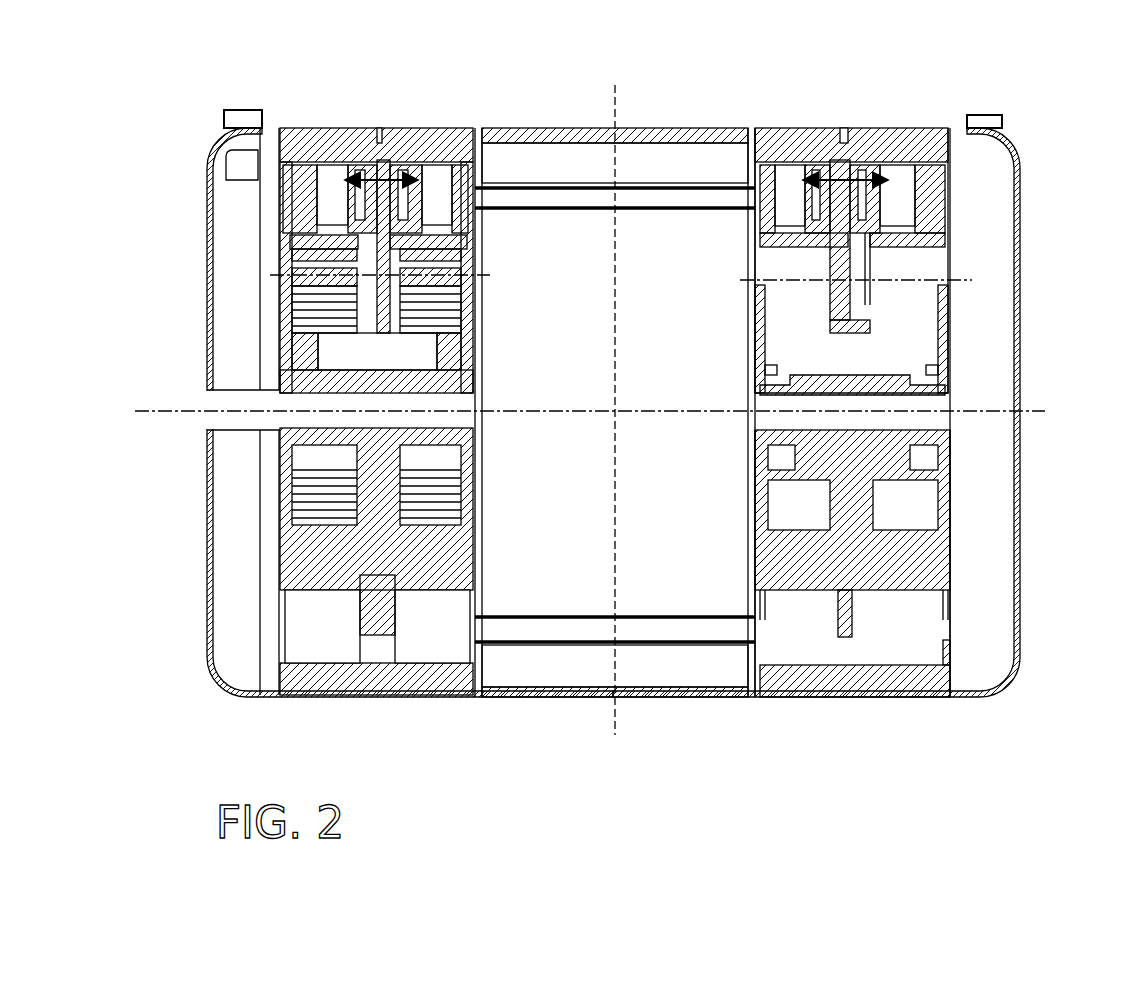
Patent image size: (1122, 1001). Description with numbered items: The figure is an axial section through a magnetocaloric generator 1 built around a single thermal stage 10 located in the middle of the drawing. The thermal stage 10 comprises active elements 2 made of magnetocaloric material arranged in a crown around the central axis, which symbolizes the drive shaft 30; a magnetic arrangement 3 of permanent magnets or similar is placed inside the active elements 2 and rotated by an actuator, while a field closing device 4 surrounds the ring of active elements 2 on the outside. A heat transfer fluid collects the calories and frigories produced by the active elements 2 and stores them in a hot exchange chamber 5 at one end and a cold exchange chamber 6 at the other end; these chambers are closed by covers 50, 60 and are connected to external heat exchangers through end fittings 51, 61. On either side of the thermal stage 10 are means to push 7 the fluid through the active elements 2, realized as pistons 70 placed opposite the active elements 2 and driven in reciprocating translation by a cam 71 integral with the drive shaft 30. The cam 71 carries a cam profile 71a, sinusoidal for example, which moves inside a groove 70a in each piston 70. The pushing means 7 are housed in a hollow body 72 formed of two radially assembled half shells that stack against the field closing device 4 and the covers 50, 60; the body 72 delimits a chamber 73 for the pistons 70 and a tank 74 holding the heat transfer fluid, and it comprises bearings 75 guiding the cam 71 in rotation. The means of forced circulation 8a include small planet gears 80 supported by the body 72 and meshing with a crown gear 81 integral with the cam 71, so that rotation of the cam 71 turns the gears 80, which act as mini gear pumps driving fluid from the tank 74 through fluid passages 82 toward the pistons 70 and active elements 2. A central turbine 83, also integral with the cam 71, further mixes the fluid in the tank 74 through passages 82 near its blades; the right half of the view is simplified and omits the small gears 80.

The magnetocaloric generator 1 is at (581, 439).
The active elements 2 is at (525, 197).
The magnetic arrangement 3 is at (608, 250).
The field closing device 4 is at (593, 152).
The hot exchange chamber 5 is at (218, 236).
The cold exchange chamber 6 is at (1000, 235).
The means to push 7 is at (621, 378).
The means of forced circulation 8a is at (581, 415).
The thermal stage 10 is at (615, 444).
The drive shaft 30 is at (588, 398).
The cover 50 is at (208, 190).
The end fitting 51 is at (232, 118).
The cover 60 is at (1018, 195).
The end fitting 61 is at (997, 126).
The piston 70 is at (350, 160).
The groove 70a is at (838, 165).
The cam 71 is at (355, 530).
The cam profile 71a is at (372, 640).
The hollow body 72 is at (865, 165).
The chamber 73 is at (943, 140).
The tank 74 is at (921, 323).
The bearings 75 is at (938, 365).
The small planet gears 80 is at (295, 285).
The crown gear 81 is at (295, 272).
The fluid passages 82 is at (420, 350).
The central turbine 83 is at (422, 463).